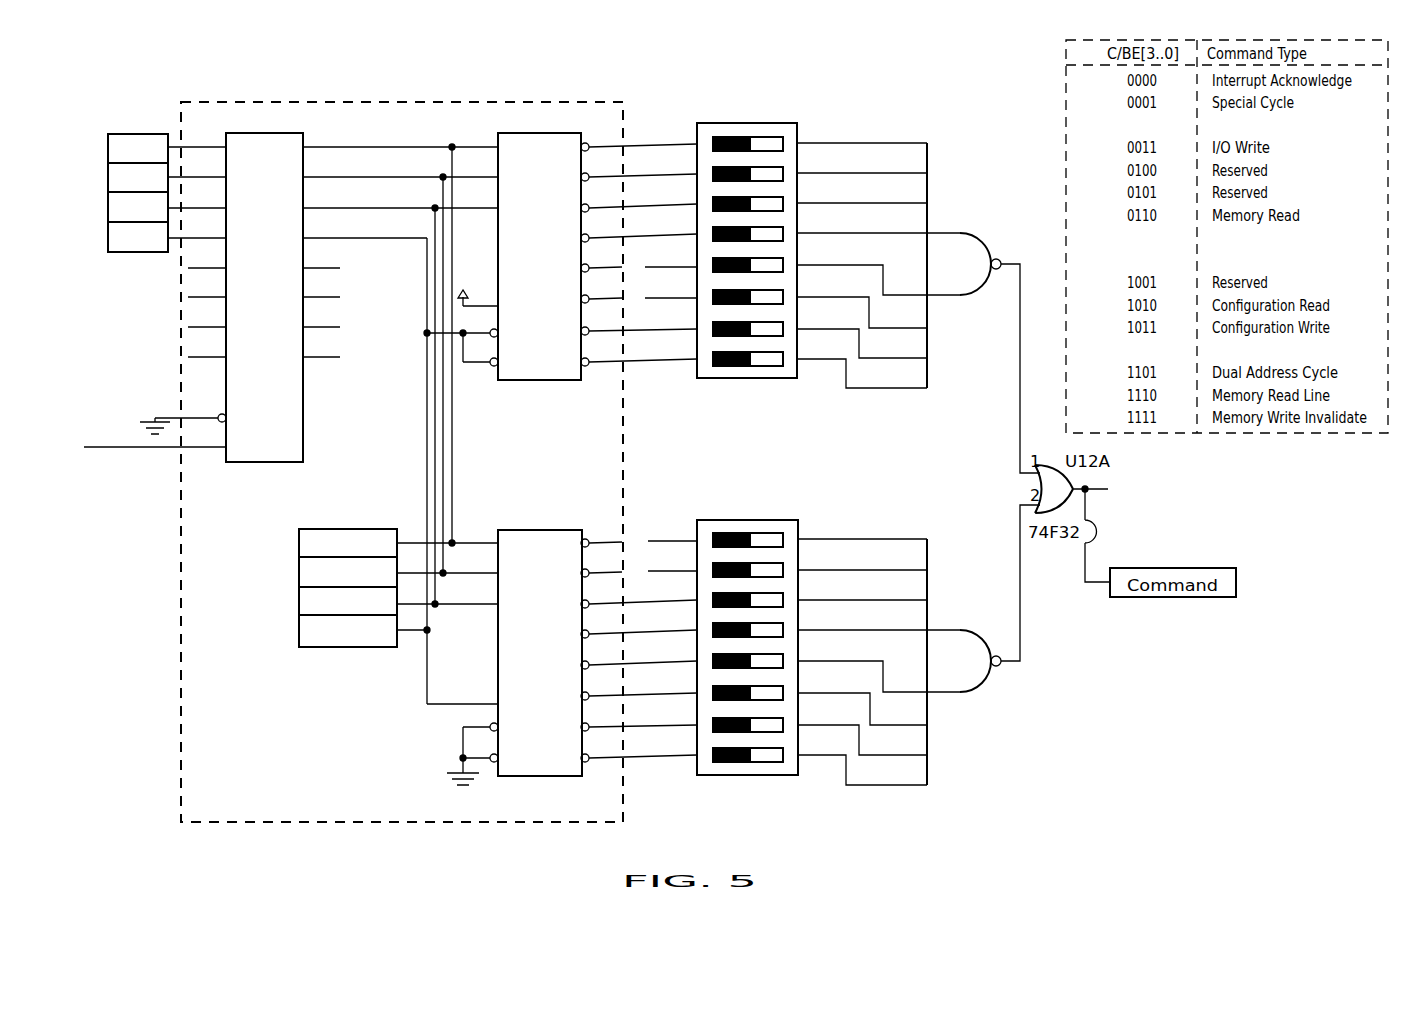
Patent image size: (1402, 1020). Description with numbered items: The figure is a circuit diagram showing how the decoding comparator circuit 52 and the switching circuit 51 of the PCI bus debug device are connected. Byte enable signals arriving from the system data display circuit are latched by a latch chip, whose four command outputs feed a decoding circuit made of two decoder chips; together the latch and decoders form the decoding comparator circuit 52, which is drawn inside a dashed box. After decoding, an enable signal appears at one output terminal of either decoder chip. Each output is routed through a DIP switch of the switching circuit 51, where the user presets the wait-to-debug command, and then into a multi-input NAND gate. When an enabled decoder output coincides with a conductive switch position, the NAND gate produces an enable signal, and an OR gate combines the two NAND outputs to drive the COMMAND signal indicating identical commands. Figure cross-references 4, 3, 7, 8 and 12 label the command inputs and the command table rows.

The switching circuit 51 is at (759, 99).
The decoding comparator circuit 52 is at (380, 442).
The COMMAND inputs from FIG. 4 is at (337, 588).
The I/O Read command (FIG. 3) 3 is at (1180, 125).
The Memory Write command (FIG. 7) 7 is at (1195, 237).
The Reserved command (FIG. 8) 8 is at (1179, 260).
The Memory Read Multiple command (FIG. 12) 12 is at (1218, 350).